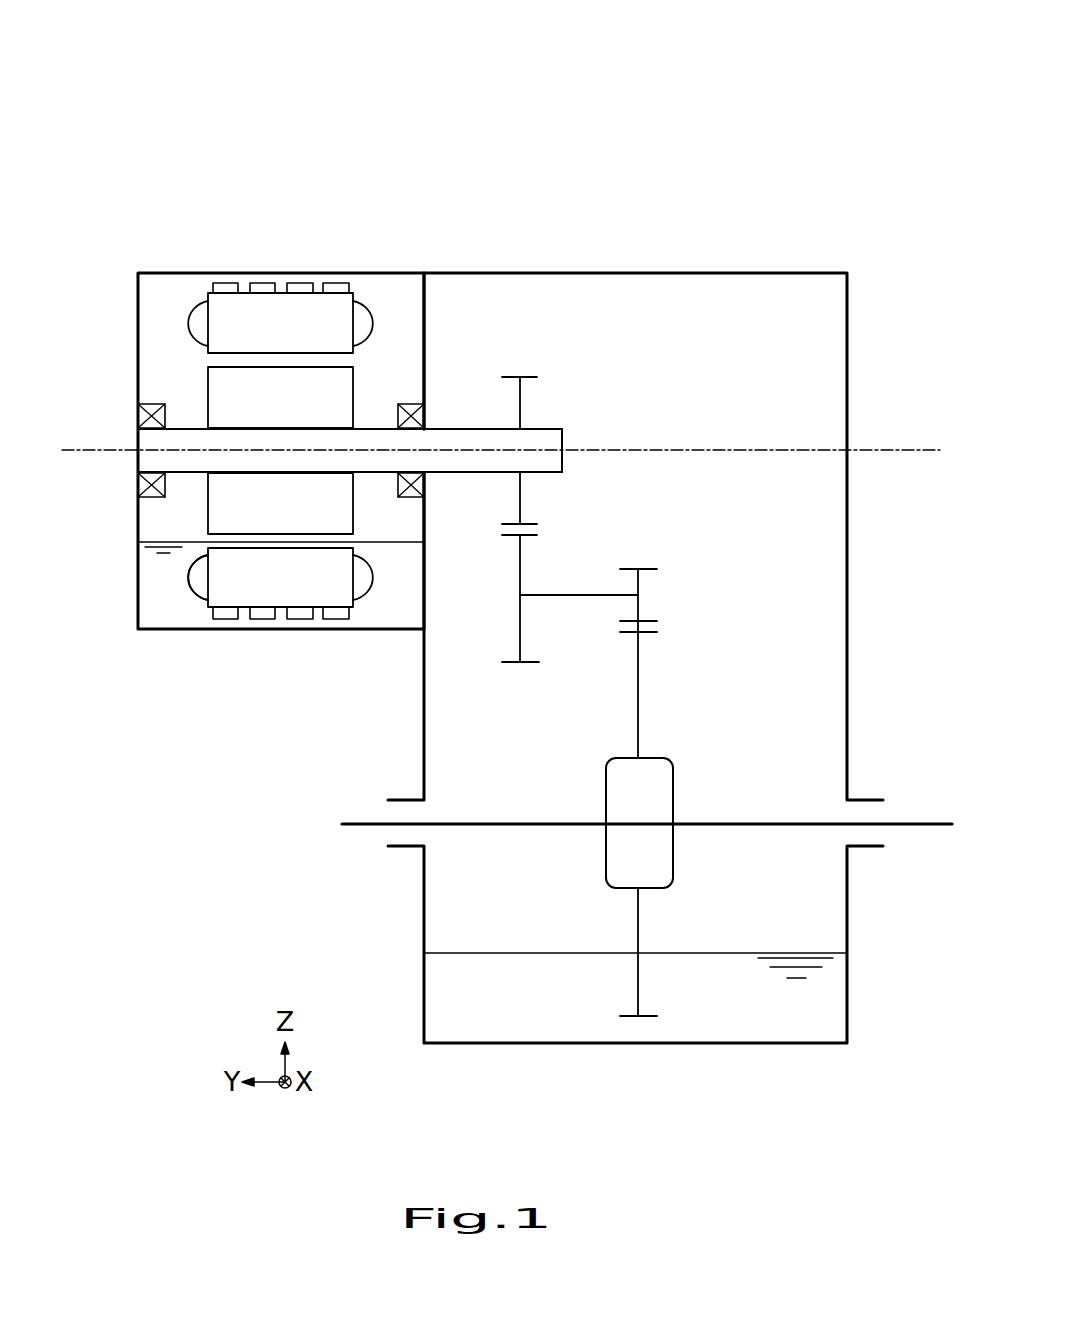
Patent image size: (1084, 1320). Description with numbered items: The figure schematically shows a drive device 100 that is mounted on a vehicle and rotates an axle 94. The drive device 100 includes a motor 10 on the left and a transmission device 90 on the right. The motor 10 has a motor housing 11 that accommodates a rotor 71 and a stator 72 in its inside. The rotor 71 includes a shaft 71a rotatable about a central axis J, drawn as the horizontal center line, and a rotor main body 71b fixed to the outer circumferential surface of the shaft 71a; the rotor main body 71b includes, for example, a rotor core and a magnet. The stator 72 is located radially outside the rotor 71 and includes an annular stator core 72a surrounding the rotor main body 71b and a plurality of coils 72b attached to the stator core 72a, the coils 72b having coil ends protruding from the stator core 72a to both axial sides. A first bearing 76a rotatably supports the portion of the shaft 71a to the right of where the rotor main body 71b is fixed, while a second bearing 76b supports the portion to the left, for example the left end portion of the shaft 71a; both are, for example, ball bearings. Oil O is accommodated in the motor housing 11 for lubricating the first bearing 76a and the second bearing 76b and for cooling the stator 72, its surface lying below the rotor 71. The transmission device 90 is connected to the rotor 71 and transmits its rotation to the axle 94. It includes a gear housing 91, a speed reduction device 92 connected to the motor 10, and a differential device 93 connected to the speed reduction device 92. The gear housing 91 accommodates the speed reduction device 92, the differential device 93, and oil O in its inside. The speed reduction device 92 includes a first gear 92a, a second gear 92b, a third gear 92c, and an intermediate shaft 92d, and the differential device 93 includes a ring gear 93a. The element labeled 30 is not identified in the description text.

The drive device 100 is at (842, 87).
The motor 10 is at (252, 250).
The motor housing 11 is at (157, 273).
The stator 30 is at (303, 278).
The rotor 71 is at (445, 422).
The shaft 71a is at (475, 438).
The rotor main body 71b is at (215, 508).
The stator 72 is at (183, 323).
The stator core 72a is at (257, 597).
The coil 72b is at (193, 585).
The first bearing 76a is at (410, 404).
The second bearing 76b is at (143, 484).
The transmission device 90 is at (805, 252).
The gear housing 91 is at (708, 273).
The speed reduction device 92 is at (647, 553).
The first gear 92a is at (522, 402).
The second gear 92b is at (512, 642).
The third gear 92c is at (640, 608).
The intermediate shaft 92d is at (582, 595).
The differential device 93 is at (688, 778).
The ring gear 93a is at (638, 927).
The axle 94 is at (355, 828).
The central axis J is at (101, 450).
The oil O is at (167, 616).